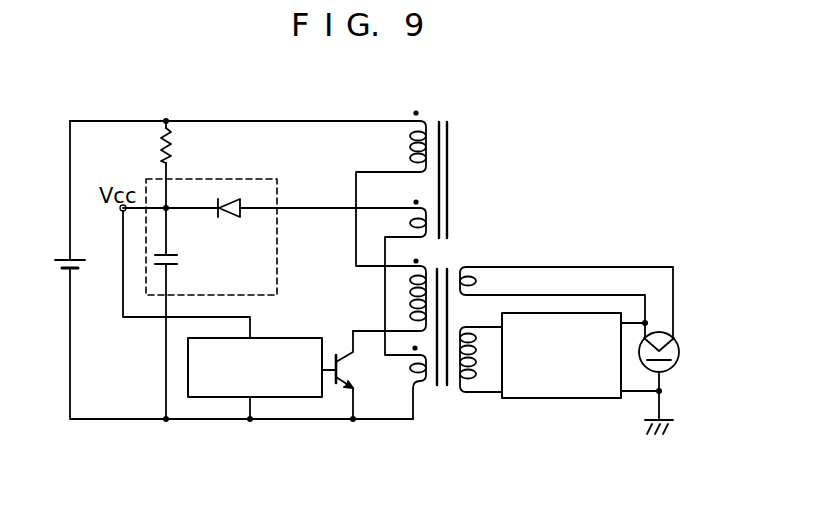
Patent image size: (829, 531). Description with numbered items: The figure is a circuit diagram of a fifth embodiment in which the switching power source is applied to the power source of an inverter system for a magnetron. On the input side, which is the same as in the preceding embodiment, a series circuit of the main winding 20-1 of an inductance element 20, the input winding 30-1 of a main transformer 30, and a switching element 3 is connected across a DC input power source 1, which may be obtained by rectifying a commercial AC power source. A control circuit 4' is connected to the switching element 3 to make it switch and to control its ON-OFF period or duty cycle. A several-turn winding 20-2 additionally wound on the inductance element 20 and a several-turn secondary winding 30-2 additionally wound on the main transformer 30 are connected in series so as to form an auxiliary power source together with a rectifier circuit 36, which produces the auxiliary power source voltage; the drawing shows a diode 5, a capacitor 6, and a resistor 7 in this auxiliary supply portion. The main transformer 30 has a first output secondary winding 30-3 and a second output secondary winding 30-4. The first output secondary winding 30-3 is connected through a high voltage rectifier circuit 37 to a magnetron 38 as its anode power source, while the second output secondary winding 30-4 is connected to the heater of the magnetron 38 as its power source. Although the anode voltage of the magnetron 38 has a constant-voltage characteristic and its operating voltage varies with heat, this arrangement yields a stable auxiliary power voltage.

The DC input power source 1 is at (62, 268).
The switching element 3 is at (350, 378).
The control circuit 4' is at (255, 403).
The diode 5 is at (233, 218).
The capacitor 6 is at (178, 259).
The resistor 7 is at (160, 146).
The inductance element 20 is at (443, 112).
The main winding 20-1 is at (410, 143).
The winding 20-2 is at (414, 223).
The main transformer 30 is at (441, 390).
The input winding 30-1 is at (410, 294).
The secondary winding 30-2 is at (421, 385).
The first output secondary winding 30-3 is at (476, 380).
The second output secondary winding 30-4 is at (471, 263).
The rectifier circuit 36 is at (248, 178).
The high voltage rectifier circuit 37 is at (597, 400).
The magnetron 38 is at (679, 360).